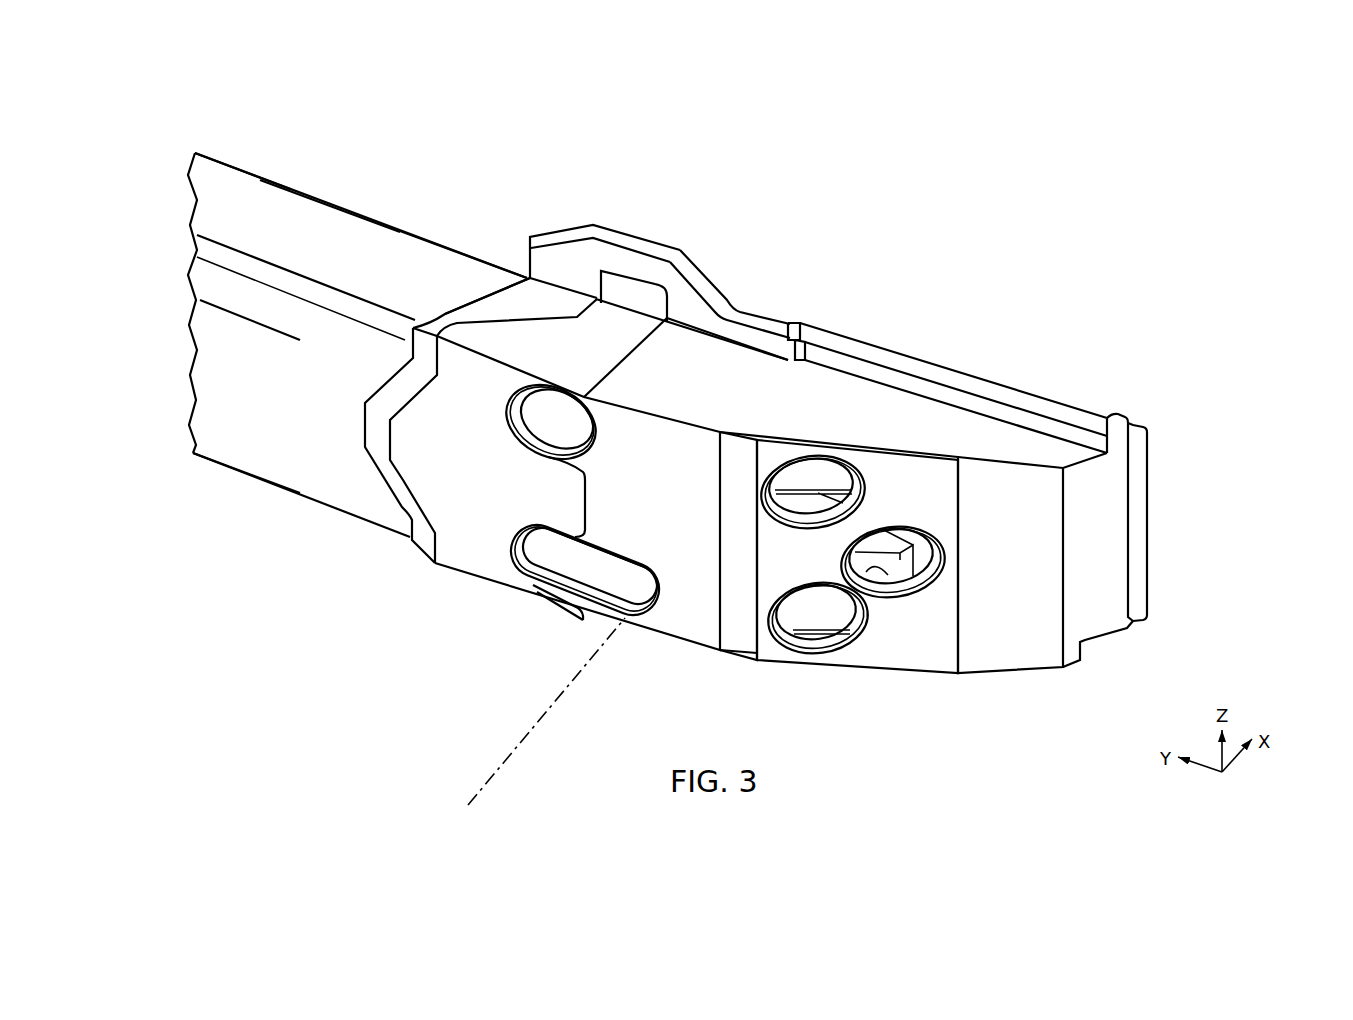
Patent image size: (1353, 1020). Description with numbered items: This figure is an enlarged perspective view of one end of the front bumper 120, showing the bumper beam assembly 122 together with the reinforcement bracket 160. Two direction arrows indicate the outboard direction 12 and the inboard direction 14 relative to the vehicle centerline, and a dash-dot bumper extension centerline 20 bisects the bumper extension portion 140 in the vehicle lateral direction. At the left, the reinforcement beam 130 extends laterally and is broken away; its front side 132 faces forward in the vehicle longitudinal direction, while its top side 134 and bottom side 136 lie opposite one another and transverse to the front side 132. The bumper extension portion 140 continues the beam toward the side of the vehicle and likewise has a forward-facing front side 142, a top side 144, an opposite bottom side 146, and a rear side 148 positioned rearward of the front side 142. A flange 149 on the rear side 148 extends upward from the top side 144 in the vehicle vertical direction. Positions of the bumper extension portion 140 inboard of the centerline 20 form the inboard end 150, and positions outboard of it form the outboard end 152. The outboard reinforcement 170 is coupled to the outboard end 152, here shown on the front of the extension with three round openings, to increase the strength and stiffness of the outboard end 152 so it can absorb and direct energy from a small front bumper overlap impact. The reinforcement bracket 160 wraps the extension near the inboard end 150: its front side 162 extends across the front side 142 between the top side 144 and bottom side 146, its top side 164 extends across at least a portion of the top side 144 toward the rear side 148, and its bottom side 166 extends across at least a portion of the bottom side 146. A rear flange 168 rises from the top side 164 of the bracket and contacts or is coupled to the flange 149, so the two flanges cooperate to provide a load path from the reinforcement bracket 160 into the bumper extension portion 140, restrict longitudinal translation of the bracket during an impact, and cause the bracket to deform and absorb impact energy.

The direction 12 is at (453, 748).
The direction 14 is at (388, 725).
The bumper extension centerline 20 is at (500, 770).
The front bumper 120 is at (298, 163).
The bumper beam assembly 122 is at (447, 234).
The reinforcement beam 130 is at (238, 138).
The front side 132 is at (217, 355).
The top side 134 is at (330, 228).
The bottom side 136 is at (253, 480).
The bumper extension portion 140 is at (853, 302).
The front side 142 is at (681, 534).
The top side 144 is at (715, 355).
The bottom side 146 is at (708, 648).
The rear side 148 is at (790, 322).
The flange 149 is at (582, 237).
The inboard end 150 is at (521, 270).
The outboard end 152 is at (1142, 400).
The reinforcement bracket 160 is at (446, 581).
The front side 162 is at (430, 493).
The top side 164 is at (607, 306).
The bottom side 166 is at (558, 614).
The rear flange 168 is at (655, 296).
The outboard reinforcement 170 is at (903, 642).